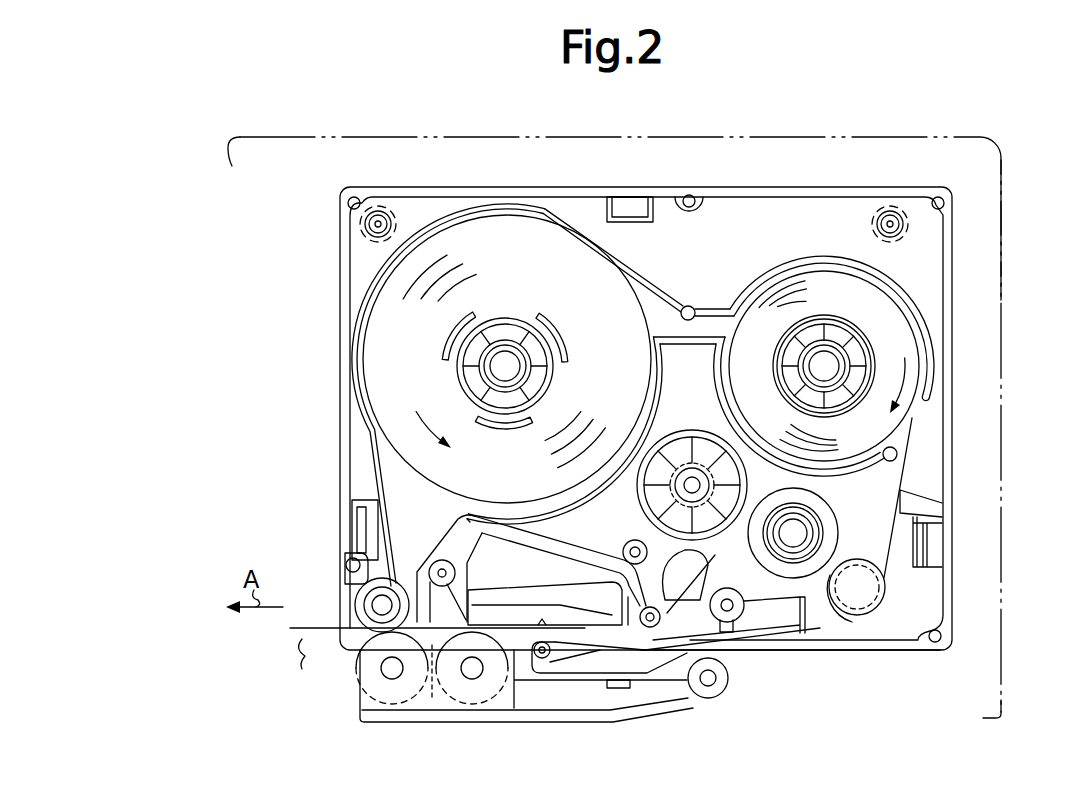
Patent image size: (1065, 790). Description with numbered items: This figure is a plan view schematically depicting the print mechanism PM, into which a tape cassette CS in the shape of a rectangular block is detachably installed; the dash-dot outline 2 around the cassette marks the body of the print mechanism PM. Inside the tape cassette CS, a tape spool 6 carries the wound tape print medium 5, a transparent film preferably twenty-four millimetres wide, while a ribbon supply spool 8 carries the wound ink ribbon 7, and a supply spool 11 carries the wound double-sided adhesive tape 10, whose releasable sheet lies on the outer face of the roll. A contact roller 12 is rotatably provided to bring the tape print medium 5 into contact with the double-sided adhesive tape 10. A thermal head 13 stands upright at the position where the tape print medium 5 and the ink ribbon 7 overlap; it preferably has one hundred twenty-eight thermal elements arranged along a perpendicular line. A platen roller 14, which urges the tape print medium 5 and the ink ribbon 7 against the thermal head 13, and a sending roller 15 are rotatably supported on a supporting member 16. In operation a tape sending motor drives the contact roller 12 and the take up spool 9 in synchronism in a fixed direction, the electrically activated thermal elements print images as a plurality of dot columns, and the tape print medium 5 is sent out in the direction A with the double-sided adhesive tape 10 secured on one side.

The cassette holder 2 is at (1006, 226).
The tape print medium 5 is at (835, 283).
The tape spool 6 is at (865, 340).
The ink ribbon 7 is at (836, 520).
The ribbon supply spool 8 is at (862, 566).
The take up spool 9 is at (707, 432).
The double-sided adhesive tape 10 is at (483, 234).
The supply spool 11 is at (519, 318).
The contact roller 12 is at (367, 595).
The thermal head 13 is at (511, 640).
The platen roller 14 is at (457, 700).
The sending roller 15 is at (381, 700).
The supporting member 16 is at (612, 724).
The tape cassette CS is at (960, 409).
The print mechanism PM is at (254, 692).